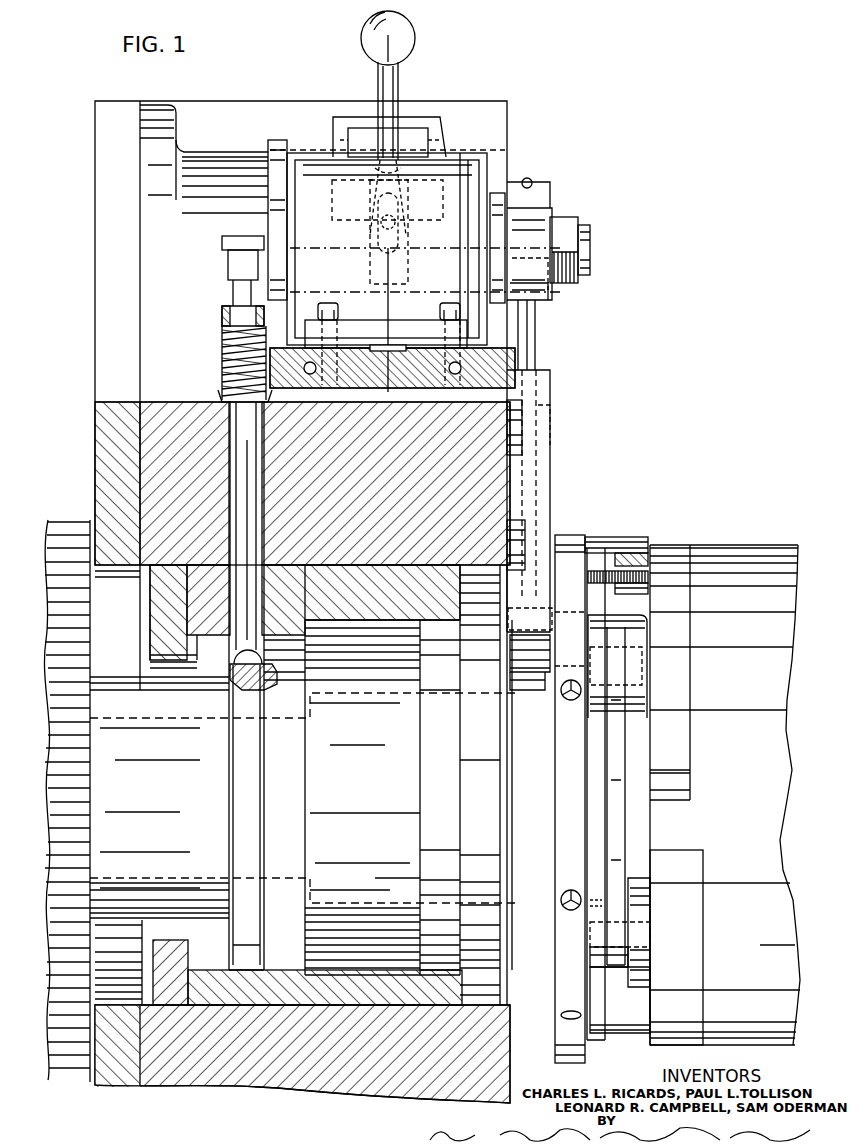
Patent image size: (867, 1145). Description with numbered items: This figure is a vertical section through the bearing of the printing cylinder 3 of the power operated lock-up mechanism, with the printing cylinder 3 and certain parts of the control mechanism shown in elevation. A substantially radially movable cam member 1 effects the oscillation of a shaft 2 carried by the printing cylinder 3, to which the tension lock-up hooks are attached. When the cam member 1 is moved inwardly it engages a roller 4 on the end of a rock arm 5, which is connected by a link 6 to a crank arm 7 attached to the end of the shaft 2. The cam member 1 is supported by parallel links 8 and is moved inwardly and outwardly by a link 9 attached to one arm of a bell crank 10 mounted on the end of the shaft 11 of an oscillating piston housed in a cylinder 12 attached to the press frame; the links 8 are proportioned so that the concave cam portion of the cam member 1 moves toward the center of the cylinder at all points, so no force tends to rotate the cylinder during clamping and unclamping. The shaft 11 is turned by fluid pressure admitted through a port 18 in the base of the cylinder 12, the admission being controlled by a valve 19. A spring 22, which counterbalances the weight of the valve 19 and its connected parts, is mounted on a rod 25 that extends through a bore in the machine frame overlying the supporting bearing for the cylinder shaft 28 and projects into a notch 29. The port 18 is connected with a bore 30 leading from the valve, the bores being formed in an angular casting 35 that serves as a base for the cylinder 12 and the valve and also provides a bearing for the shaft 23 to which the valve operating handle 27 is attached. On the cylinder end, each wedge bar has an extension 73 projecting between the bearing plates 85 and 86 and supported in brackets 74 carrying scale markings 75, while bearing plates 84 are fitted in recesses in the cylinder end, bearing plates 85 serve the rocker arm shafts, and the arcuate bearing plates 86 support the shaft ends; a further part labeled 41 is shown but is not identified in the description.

The cam member 1 is at (543, 485).
The shaft 2 is at (650, 540).
The printing cylinder 3 is at (392, 45).
The roller 4 is at (522, 682).
The rock arm 5 is at (604, 628).
The link 6 is at (620, 845).
The crank arm 7 is at (634, 975).
The parallel links 8 is at (515, 428).
The link 9 is at (530, 340).
The bell crank 10 is at (540, 292).
The shaft 11 is at (582, 252).
The cylinder 12 is at (447, 246).
The port 18 is at (410, 362).
The valve 19 is at (437, 118).
The spring 22 is at (224, 362).
The shaft 23 is at (228, 238).
The rod 25 is at (252, 470).
The valve operating handle 27 is at (362, 40).
The cylinder shaft 28 is at (340, 698).
The notch 29 is at (266, 660).
The bore 30 is at (392, 375).
The casting 35 is at (340, 364).
The frame member 41 is at (748, 829).
The extension 73 is at (612, 575).
The brackets 74 is at (593, 556).
The scale markings 75 is at (650, 578).
The bearing plates 84 is at (682, 660).
The bearing plates 85 is at (698, 935).
The arcuate bearing plates 86 is at (566, 960).